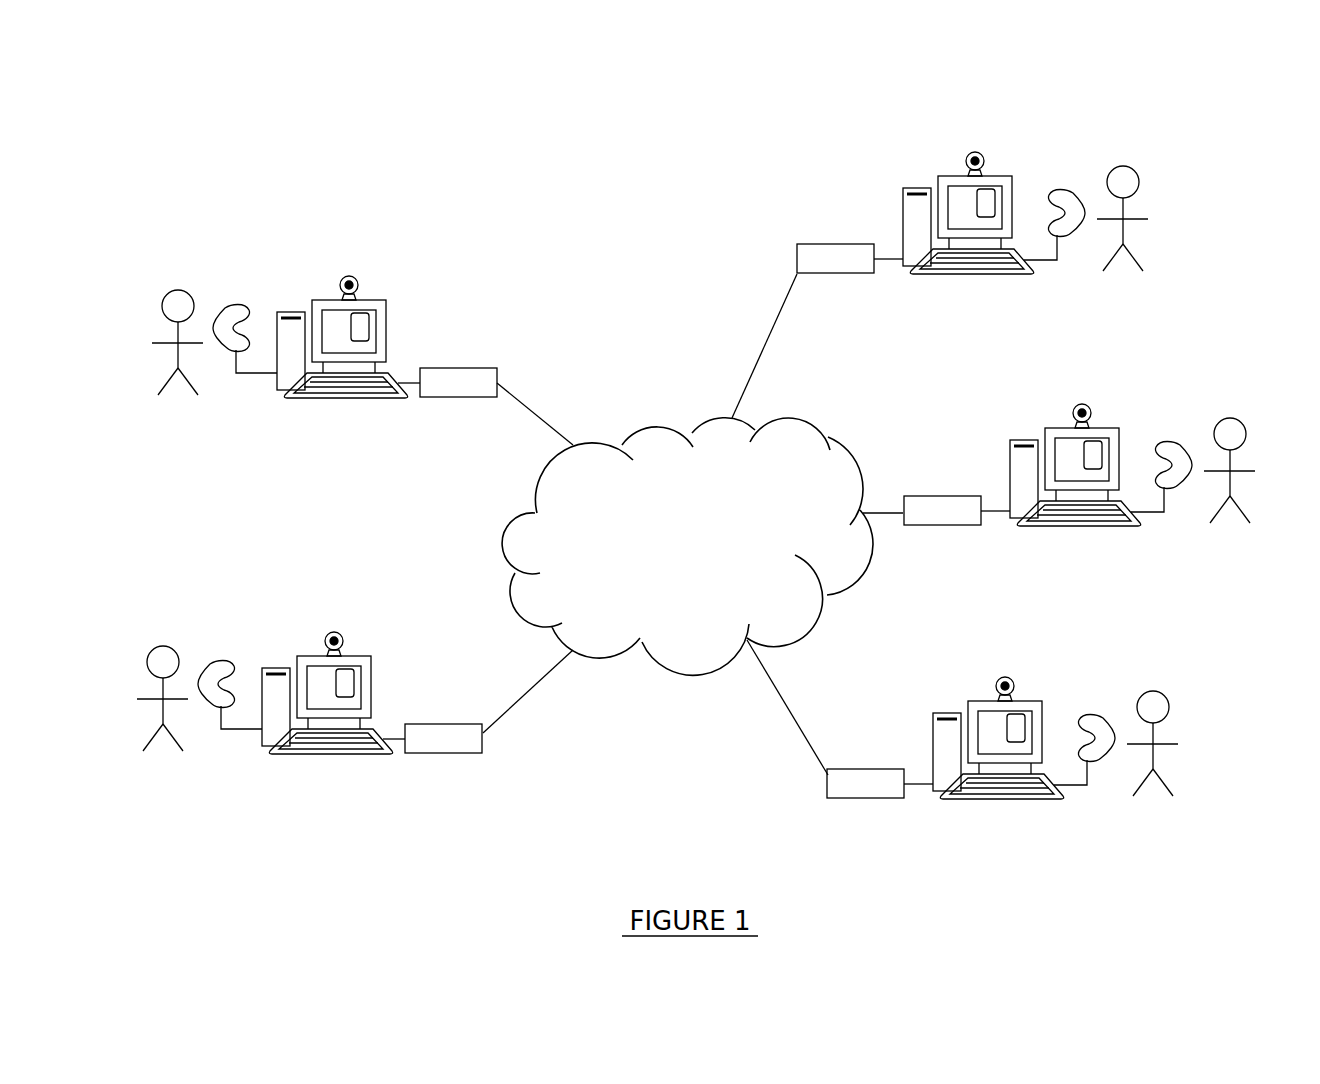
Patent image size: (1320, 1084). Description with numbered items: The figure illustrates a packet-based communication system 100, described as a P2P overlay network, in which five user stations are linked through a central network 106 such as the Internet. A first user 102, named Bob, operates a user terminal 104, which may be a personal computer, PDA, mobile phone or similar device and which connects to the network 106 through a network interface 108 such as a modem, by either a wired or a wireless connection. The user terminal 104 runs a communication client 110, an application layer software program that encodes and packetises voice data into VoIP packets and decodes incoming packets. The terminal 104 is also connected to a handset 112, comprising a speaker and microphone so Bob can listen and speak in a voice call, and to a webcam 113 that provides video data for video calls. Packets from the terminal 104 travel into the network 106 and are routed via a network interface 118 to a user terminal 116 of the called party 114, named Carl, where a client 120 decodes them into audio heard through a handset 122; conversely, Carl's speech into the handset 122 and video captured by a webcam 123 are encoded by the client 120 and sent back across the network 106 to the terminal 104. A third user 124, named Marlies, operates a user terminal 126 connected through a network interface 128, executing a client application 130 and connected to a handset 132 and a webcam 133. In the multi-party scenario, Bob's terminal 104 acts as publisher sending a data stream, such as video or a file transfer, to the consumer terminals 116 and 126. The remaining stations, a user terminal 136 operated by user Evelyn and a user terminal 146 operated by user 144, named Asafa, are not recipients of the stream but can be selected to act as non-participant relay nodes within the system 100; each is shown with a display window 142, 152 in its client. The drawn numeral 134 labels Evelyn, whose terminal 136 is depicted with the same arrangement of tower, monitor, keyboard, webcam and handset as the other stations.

The packet-based communication system 100 is at (303, 151).
The first user 102 is at (1232, 417).
The user terminal 104 is at (1051, 427).
The network 106 is at (505, 539).
The network interface 108 is at (945, 495).
The communication client 110 is at (1096, 441).
The handset 112 is at (1180, 445).
The webcam 113 is at (1085, 403).
The called party 114 is at (163, 646).
The user terminal 116 is at (309, 655).
The network interface 118 is at (446, 723).
The client 120 is at (348, 669).
The handset 122 is at (215, 665).
The webcam 123 is at (338, 632).
The user 124 is at (178, 289).
The user terminal 126 is at (323, 300).
The network interface 128 is at (458, 367).
The client application 130 is at (362, 313).
The handset 132 is at (236, 306).
The webcam 133 is at (352, 276).
The user Evelyn 134 is at (1123, 165).
The user terminal 136 is at (945, 176).
The display window 142 is at (988, 190).
The user 144 is at (1153, 689).
The user terminal 146 is at (975, 700).
The display window 152 is at (1021, 713).